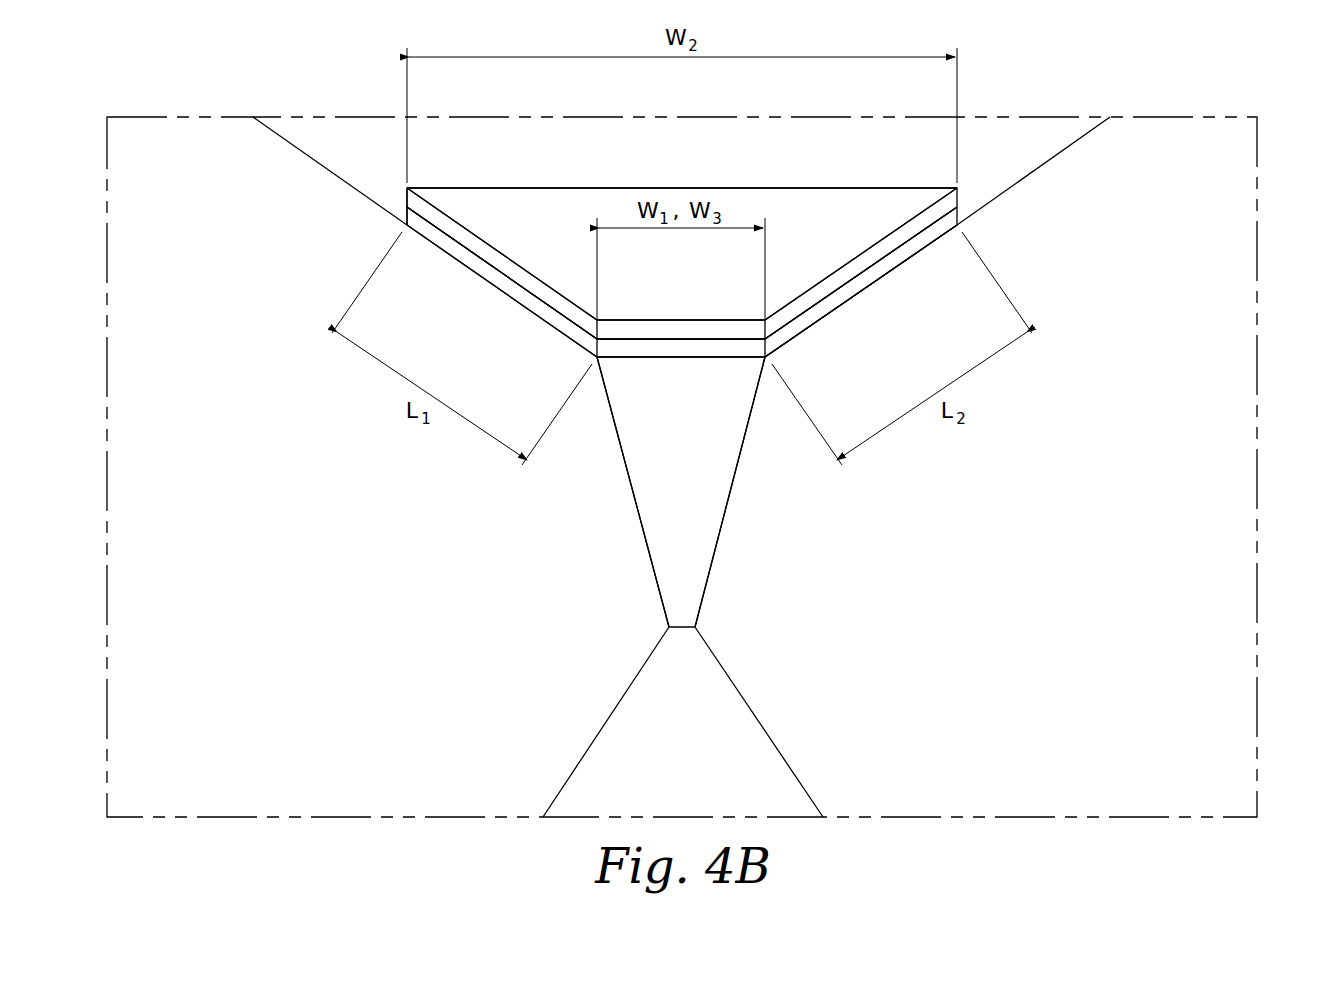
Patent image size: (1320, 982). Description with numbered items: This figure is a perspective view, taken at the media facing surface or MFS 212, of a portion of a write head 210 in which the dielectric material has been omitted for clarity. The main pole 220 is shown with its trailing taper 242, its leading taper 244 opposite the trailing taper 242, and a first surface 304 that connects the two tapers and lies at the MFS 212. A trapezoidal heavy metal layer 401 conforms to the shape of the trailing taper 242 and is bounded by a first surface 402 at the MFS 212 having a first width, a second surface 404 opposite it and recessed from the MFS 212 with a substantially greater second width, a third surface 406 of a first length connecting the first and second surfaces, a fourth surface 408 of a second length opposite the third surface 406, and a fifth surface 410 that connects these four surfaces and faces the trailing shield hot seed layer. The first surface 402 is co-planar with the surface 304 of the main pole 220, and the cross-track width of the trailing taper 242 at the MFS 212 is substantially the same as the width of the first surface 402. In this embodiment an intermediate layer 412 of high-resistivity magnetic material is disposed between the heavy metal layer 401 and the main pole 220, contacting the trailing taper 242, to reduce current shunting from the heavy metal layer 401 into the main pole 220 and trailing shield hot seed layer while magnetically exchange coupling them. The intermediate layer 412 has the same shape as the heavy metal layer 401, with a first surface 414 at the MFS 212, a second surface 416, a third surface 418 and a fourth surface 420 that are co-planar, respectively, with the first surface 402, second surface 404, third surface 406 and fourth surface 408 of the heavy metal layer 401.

The write head 210 is at (1206, 78).
The heavy metal layer 401 is at (972, 150).
The trailing taper 242 is at (663, 163).
The second surface 404 is at (815, 188).
The second surface 416 is at (407, 212).
The third surface 406 is at (460, 234).
The fourth surface 408 is at (901, 234).
The third surface 418 is at (517, 290).
The fourth surface 420 is at (848, 291).
The intermediate layer 412 is at (803, 337).
The fifth surface 410 is at (663, 262).
The first surface 402 is at (665, 331).
The first surface 414 is at (688, 348).
The first surface 304 is at (662, 452).
The main pole 220 is at (621, 522).
The MFS 212 is at (744, 522).
The leading taper 244 is at (662, 761).